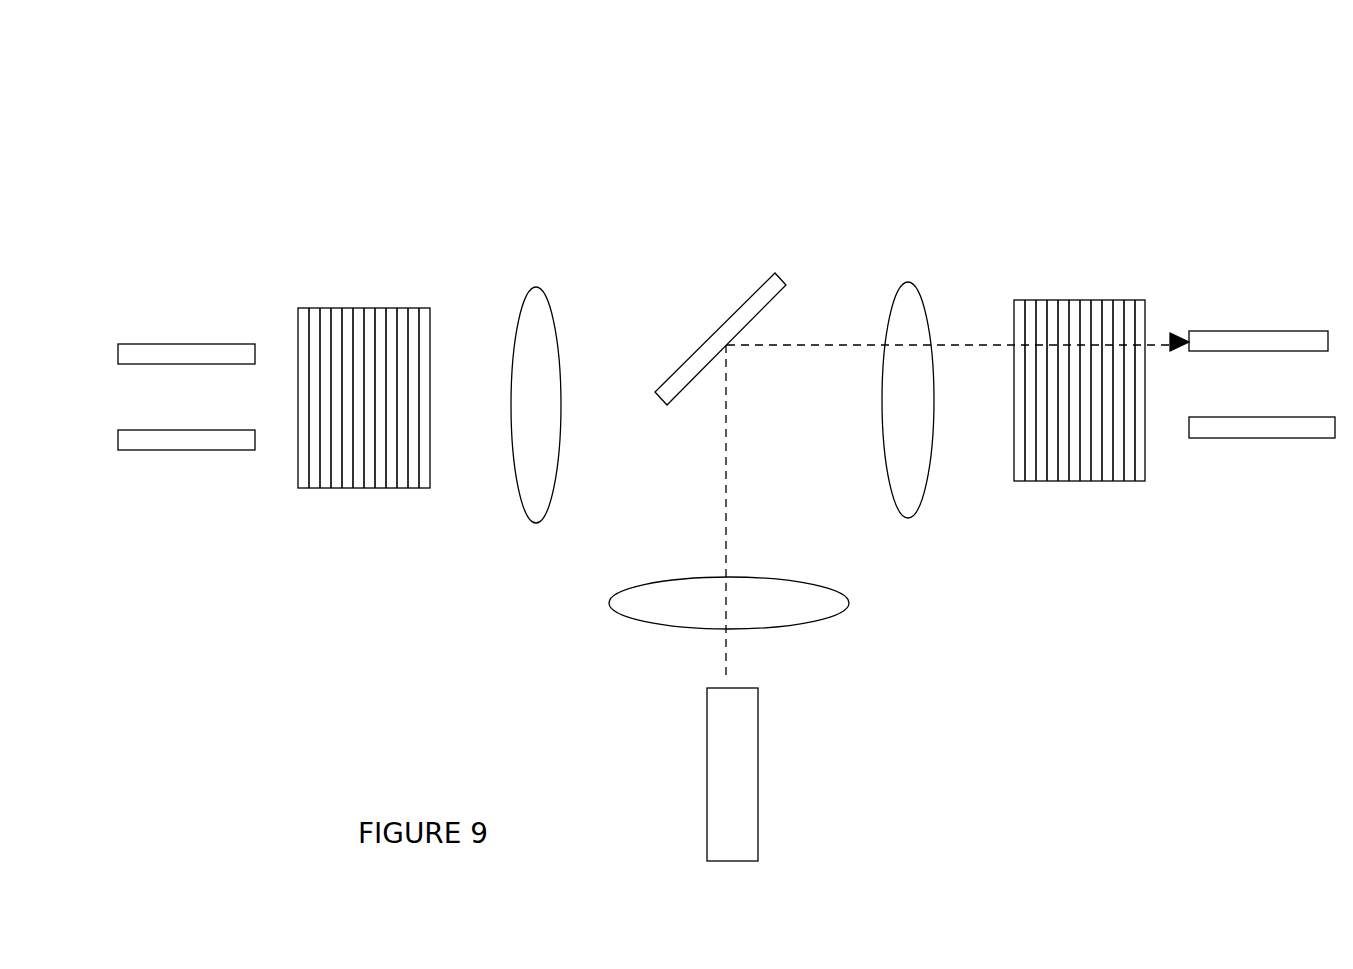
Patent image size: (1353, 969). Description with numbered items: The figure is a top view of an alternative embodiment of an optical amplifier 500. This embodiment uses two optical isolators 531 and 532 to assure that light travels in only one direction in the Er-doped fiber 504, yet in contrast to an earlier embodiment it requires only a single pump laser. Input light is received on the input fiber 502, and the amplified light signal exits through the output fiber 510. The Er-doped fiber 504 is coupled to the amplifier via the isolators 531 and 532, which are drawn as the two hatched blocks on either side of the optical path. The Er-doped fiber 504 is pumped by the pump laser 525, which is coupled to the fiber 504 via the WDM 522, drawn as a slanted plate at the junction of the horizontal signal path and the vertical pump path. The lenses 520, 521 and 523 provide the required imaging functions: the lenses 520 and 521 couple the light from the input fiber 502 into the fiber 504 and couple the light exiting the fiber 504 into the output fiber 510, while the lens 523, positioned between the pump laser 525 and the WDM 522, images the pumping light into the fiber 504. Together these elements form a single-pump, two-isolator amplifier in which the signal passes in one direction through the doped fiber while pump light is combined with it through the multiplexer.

The optical amplifier 500 is at (338, 127).
The input fiber 502 is at (180, 440).
The Er-doped fiber 504 is at (1302, 255).
The output fiber 510 is at (1282, 428).
The lens 520 is at (545, 498).
The lens 521 is at (920, 315).
The WDM 522 is at (737, 322).
The lens 523 is at (805, 592).
The pump laser 525 is at (750, 790).
The optical isolator 531 is at (303, 475).
The optical isolator 532 is at (998, 553).